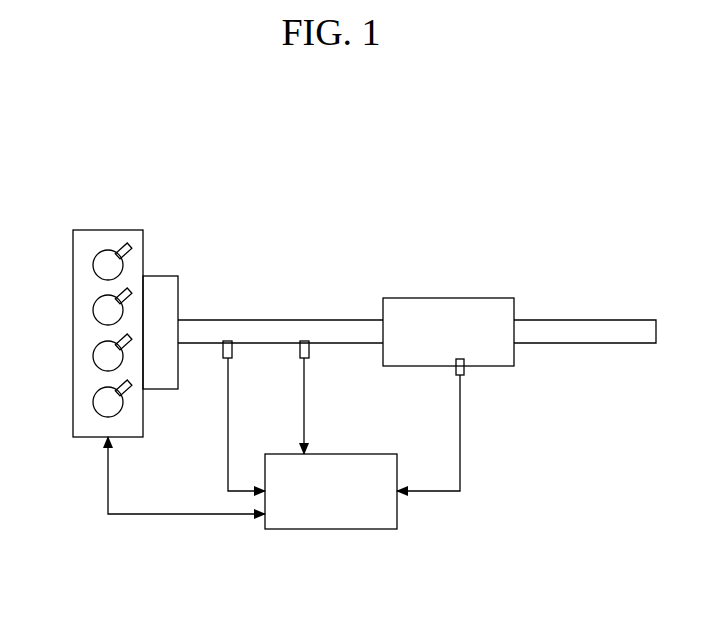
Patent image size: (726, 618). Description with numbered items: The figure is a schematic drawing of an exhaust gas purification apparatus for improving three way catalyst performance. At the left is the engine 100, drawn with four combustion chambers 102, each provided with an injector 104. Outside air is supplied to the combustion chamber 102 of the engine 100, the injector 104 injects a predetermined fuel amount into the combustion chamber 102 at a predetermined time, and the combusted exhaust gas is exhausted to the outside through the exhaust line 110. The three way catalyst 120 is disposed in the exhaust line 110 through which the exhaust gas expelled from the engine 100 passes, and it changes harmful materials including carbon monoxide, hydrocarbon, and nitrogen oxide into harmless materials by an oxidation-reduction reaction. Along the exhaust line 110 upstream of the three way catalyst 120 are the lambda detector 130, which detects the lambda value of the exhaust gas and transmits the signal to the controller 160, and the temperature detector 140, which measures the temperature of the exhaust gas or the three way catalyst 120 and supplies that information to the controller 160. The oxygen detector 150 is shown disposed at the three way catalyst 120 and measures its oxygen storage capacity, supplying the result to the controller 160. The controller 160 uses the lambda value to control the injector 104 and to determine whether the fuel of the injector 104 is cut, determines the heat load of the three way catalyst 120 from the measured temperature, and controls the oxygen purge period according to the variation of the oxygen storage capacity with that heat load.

The engine 100 is at (108, 229).
The combustion chamber 102 is at (101, 265).
The injector 104 is at (129, 243).
The exhaust line 110 is at (265, 329).
The three way catalyst 120 is at (447, 297).
The lambda detector 130 is at (233, 345).
The temperature detector 140 is at (309, 345).
The oxygen detector 150 is at (465, 371).
The controller 160 is at (330, 530).